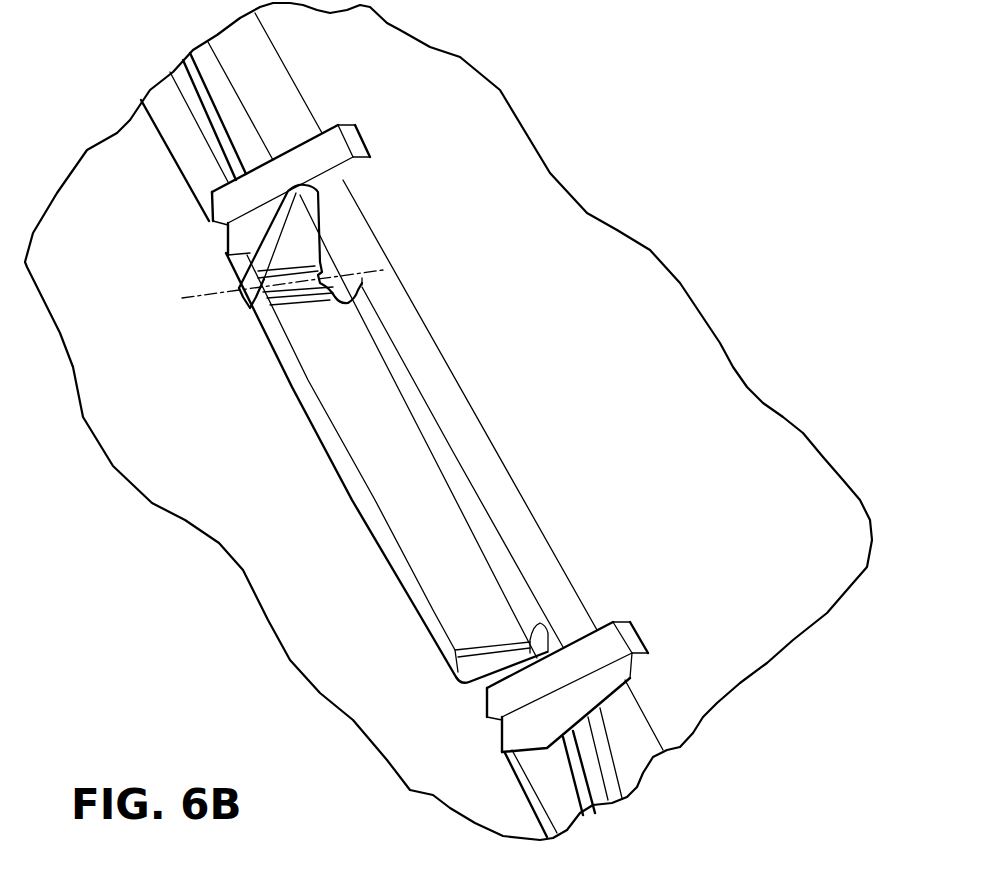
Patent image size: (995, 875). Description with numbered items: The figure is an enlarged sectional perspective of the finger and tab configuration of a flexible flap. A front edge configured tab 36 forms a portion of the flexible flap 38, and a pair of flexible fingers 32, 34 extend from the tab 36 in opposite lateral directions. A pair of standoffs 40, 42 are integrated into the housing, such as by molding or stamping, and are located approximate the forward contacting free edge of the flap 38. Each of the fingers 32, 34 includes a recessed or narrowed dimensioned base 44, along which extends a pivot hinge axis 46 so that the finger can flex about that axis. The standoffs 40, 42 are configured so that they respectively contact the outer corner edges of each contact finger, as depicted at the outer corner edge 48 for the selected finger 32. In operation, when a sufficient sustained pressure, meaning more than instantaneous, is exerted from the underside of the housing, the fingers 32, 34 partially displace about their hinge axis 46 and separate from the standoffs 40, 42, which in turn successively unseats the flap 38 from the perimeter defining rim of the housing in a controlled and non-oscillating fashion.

The flexible finger 32 is at (302, 230).
The flexible finger 34 is at (508, 657).
The front edge configured tab 36 is at (377, 449).
The flexible flap 38 is at (628, 268).
The standoff 40 is at (331, 145).
The standoff 42 is at (607, 640).
The recessed or narrowed dimensioned base 44 is at (252, 293).
The pivot hinge axis 46 is at (205, 291).
The outer corner edge of contact finger 48 is at (292, 189).